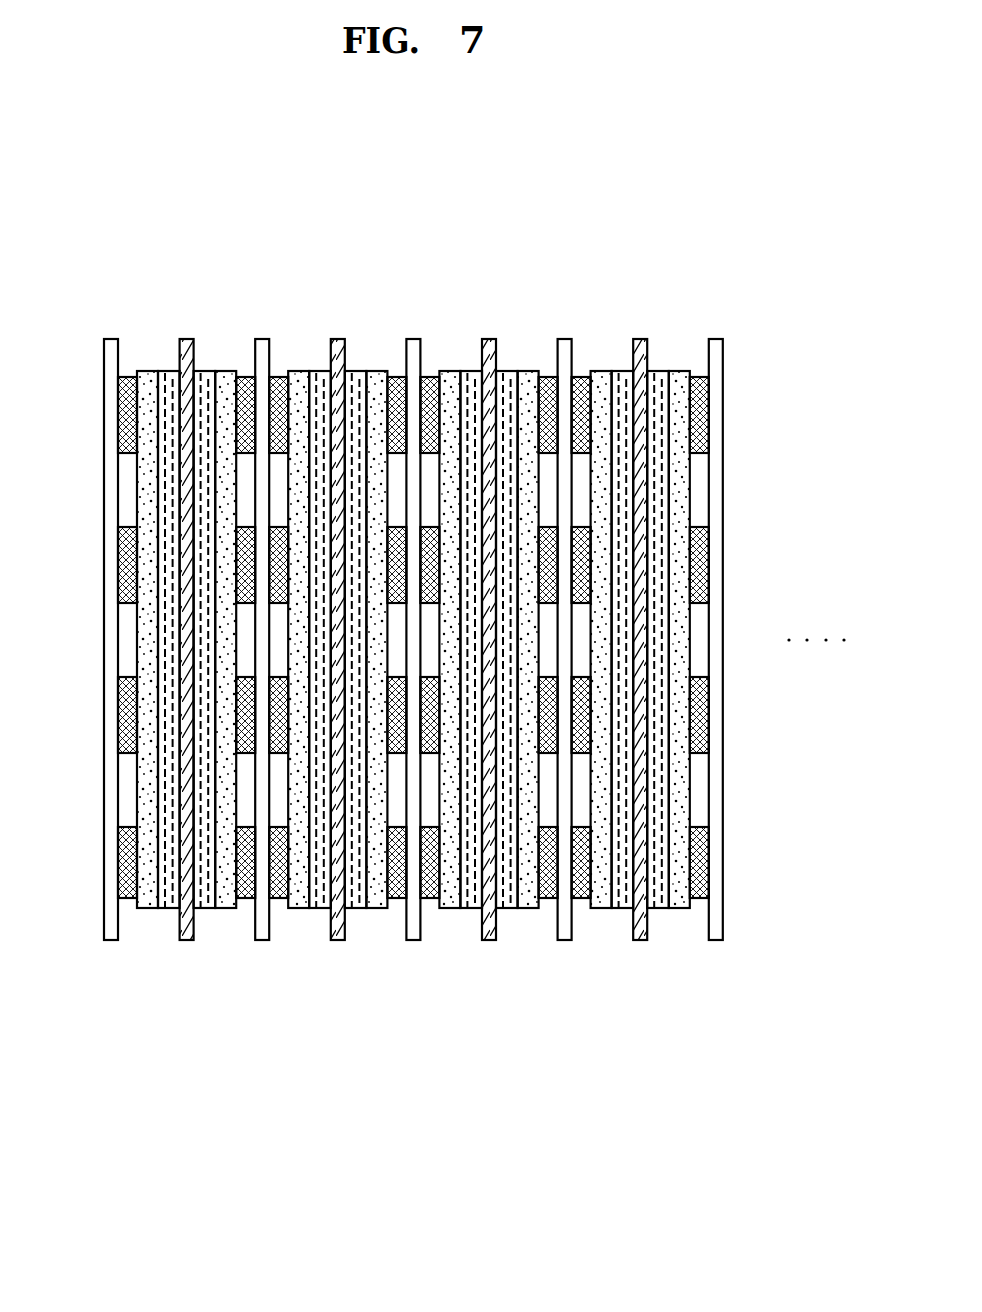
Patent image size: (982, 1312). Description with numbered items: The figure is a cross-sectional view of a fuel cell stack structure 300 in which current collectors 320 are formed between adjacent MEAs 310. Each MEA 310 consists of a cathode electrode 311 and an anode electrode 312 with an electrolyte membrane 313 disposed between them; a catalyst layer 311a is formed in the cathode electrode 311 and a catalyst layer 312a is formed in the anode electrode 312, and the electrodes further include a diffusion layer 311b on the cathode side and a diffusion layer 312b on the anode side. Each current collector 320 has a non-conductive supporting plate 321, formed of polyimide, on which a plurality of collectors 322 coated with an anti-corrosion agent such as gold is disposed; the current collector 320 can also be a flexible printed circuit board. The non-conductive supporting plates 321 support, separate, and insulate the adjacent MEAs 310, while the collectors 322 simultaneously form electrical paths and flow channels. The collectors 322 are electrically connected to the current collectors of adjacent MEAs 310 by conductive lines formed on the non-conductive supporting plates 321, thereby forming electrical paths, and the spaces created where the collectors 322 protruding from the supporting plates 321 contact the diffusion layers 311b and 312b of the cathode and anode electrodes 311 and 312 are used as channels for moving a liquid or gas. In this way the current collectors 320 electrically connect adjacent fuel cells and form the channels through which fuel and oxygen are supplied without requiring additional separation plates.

The fuel cell stack structure 300 is at (788, 294).
The MEA 310 is at (197, 1100).
The cathode electrode 311 is at (183, 1056).
The catalyst layer 311a is at (170, 908).
The diffusion layer 311b is at (142, 908).
The anode electrode 312 is at (325, 1013).
The catalyst layer 312a is at (203, 908).
The diffusion layer 312b is at (227, 908).
The electrolyte membrane 313 is at (187, 339).
The current collector 320 is at (175, 254).
The non-conductive supporting plate 321 is at (110, 371).
The collector 322 is at (137, 398).